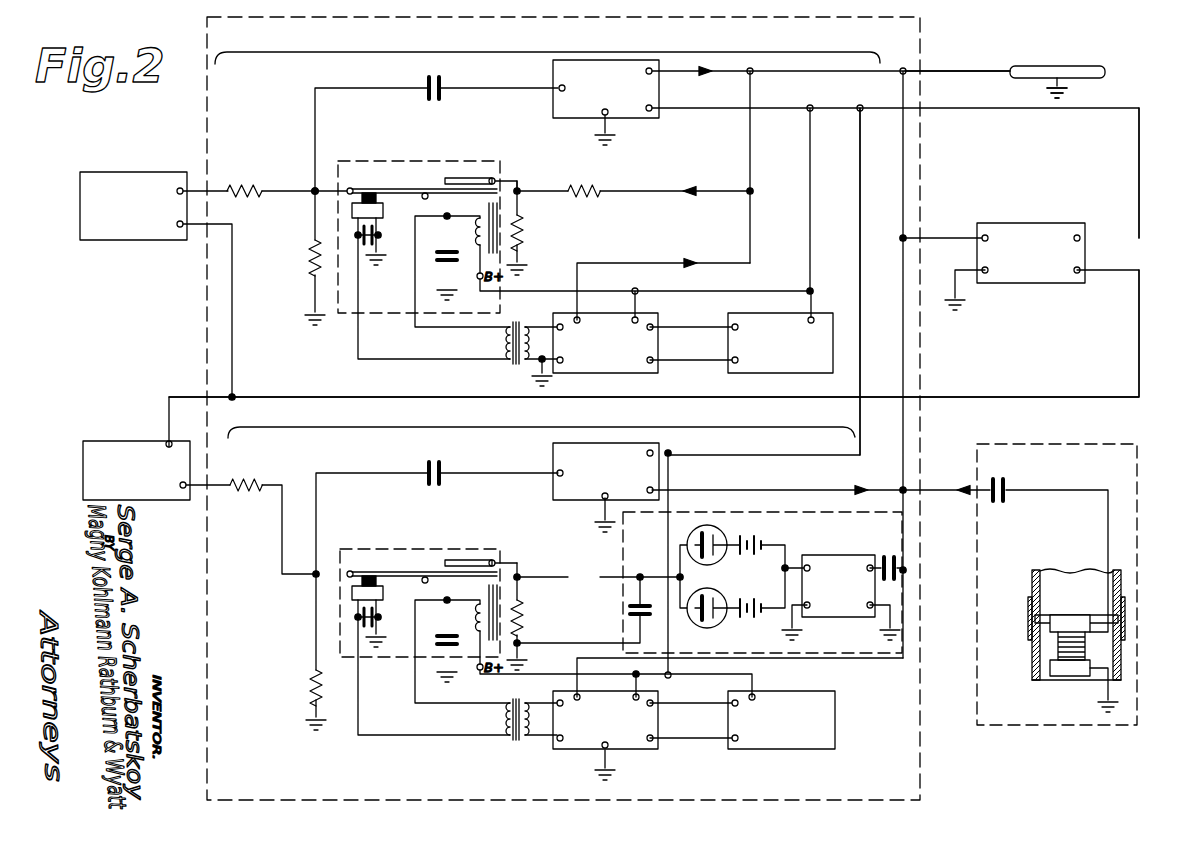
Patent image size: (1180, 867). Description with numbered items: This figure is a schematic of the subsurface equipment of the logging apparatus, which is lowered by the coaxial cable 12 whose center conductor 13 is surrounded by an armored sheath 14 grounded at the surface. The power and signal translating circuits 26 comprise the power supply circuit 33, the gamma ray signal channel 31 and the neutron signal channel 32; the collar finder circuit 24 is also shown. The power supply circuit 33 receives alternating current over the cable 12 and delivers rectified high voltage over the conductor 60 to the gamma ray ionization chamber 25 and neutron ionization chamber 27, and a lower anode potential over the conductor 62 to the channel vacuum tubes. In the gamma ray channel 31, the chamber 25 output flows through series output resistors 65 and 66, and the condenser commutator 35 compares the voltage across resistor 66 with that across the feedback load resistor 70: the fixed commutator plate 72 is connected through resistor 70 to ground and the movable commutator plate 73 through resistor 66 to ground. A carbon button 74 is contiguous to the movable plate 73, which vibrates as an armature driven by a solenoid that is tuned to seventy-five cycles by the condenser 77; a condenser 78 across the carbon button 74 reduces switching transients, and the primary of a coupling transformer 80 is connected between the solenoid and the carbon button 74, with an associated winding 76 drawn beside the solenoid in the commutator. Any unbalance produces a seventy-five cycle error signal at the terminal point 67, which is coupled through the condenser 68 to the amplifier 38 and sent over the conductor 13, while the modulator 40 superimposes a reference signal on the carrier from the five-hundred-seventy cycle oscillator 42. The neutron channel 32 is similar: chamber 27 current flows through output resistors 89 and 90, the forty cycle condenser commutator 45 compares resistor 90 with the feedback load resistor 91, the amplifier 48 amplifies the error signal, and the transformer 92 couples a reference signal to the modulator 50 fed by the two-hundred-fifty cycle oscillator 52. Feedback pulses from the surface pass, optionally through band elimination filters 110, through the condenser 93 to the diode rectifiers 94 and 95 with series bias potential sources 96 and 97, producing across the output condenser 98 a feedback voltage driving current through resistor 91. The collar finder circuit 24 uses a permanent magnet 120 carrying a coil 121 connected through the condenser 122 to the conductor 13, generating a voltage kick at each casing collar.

The cable 12 is at (1057, 66).
The center conductor 13 is at (952, 71).
The armored sheath 14 is at (1090, 83).
The collar finder circuit 24 is at (1127, 727).
The gamma ray ionization chamber 25 is at (112, 243).
The power and signal translating circuits 26 is at (563, 409).
The neutron ionization chamber 27 is at (148, 441).
The gamma ray signal channel 31 is at (547, 42).
The neutron signal channel 32 is at (541, 416).
The power supply circuit 33 is at (1020, 223).
The condenser commutator 35 is at (528, 160).
The amplifier 38 is at (645, 120).
The modulator 40 is at (645, 313).
The 570 cycle oscillator 42 is at (818, 316).
The condenser commutator 45 is at (522, 545).
The amplifier 48 is at (552, 454).
The modulator 50 is at (638, 753).
The 250 cycle oscillator 52 is at (806, 753).
The conductor 60 is at (1138, 318).
The conductor 62 is at (1138, 184).
The output resistor 65 is at (256, 184).
The output resistor 66 is at (311, 262).
The terminal point 67 is at (311, 191).
The condenser 68 is at (426, 74).
The feedback load resistor 70 is at (522, 227).
The fixed commutator plate 72 is at (466, 181).
The movable commutator plate 73 is at (428, 188).
The carbon button 74 is at (380, 197).
The transformer winding 76 is at (478, 218).
The condenser 77 is at (582, 186).
The condenser 78 is at (372, 265).
The coupling transformer 80 is at (518, 334).
The output resistor 89 is at (250, 492).
The output resistor 90 is at (312, 690).
The feedback load resistor 91 is at (522, 614).
The transformer 92 is at (530, 695).
The condenser 93 is at (890, 555).
The diode rectifier 94 is at (720, 530).
The diode rectifier 95 is at (705, 588).
The bias potential source 96 is at (758, 540).
The bias potential source 97 is at (760, 602).
The output condenser 98 is at (628, 612).
The band elimination filters 110 is at (826, 620).
The permanent magnet 120 is at (1050, 668).
The coil 121 is at (1058, 648).
The condenser 122 is at (1003, 478).